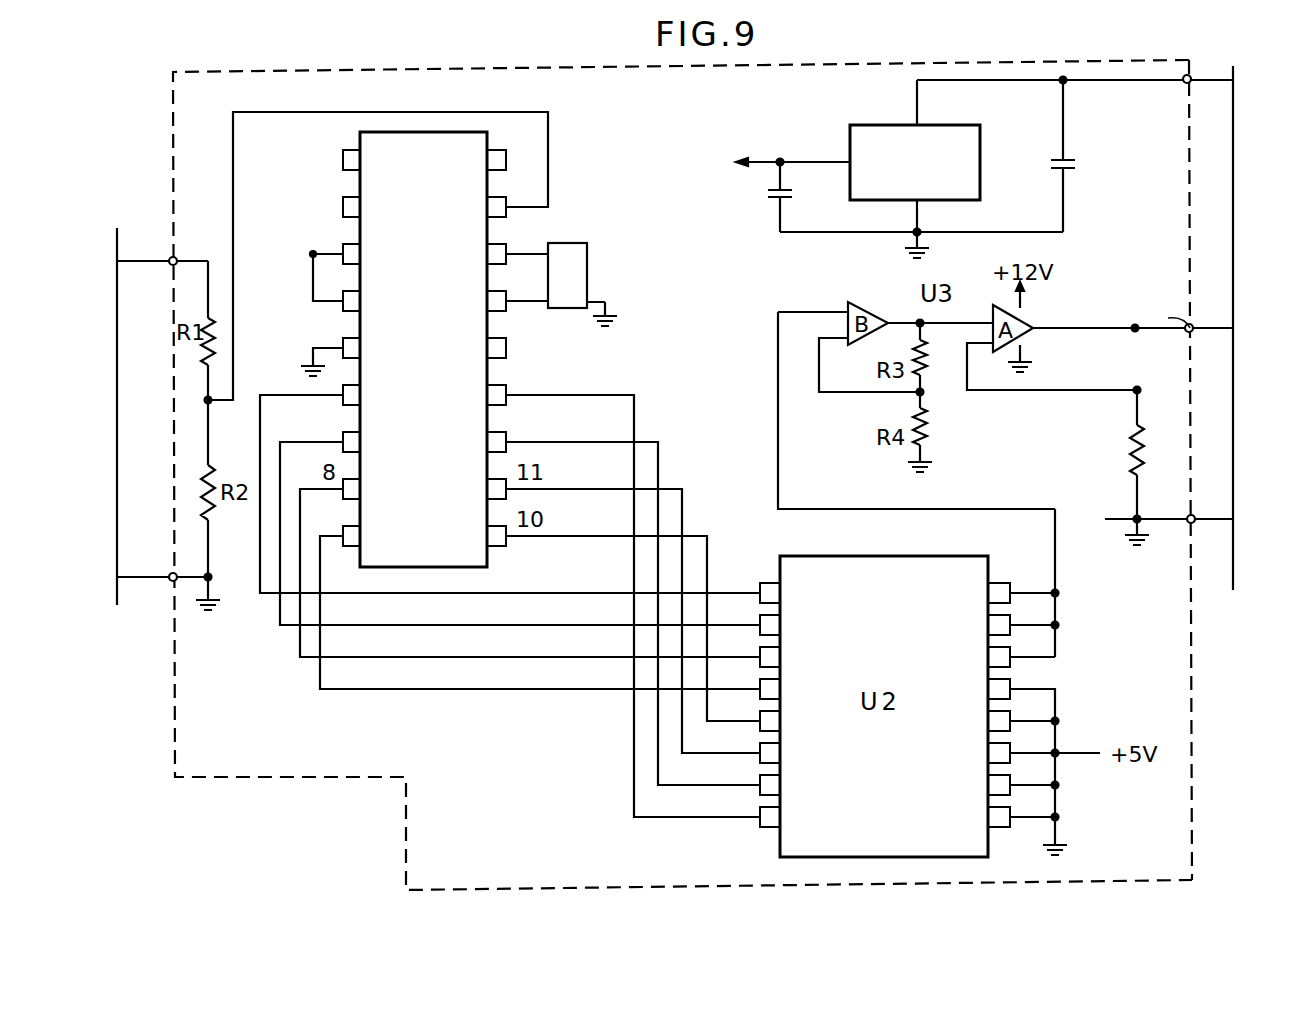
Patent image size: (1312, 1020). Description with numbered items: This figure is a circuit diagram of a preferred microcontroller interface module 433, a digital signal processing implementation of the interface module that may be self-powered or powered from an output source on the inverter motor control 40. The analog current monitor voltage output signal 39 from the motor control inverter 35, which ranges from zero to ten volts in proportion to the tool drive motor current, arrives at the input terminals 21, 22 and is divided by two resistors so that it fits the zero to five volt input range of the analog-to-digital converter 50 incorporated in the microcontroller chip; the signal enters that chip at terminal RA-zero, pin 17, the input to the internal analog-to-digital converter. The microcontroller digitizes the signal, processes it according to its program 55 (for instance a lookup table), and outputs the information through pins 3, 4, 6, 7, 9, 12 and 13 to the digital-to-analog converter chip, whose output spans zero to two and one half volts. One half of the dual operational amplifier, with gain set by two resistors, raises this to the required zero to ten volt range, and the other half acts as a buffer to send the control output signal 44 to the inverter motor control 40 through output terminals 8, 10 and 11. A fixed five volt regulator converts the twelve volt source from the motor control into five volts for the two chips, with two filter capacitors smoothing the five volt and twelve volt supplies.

The +12V supply terminal 10 is at (1096, 88).
The 0-10V output terminal 8 is at (1148, 322).
The ground terminal 11 is at (1191, 520).
The sensor input terminal 21 is at (143, 262).
The sensor return terminal 22 is at (149, 587).
The motor control inverter 35 is at (92, 416).
The analog current monitor voltage output signal 39 is at (661, 475).
The inverter motor control 40 is at (1257, 328).
The control output signal 44 is at (1210, 470).
The analog-to-digital converter 50 is at (420, 130).
The program 55 is at (352, 323).
The microcontroller interface module 433 is at (897, 168).
The U1 pin 3 is at (326, 263).
The U1 pin 4 is at (339, 293).
The U1 pin 6 is at (510, 479).
The U1 pin 7 is at (520, 518).
The U1 pin 9 is at (540, 598).
The U1 pin 12 is at (633, 598).
The U1 pin 13 is at (633, 591).
The pin 17 (terminal RA0) 17 is at (527, 192).